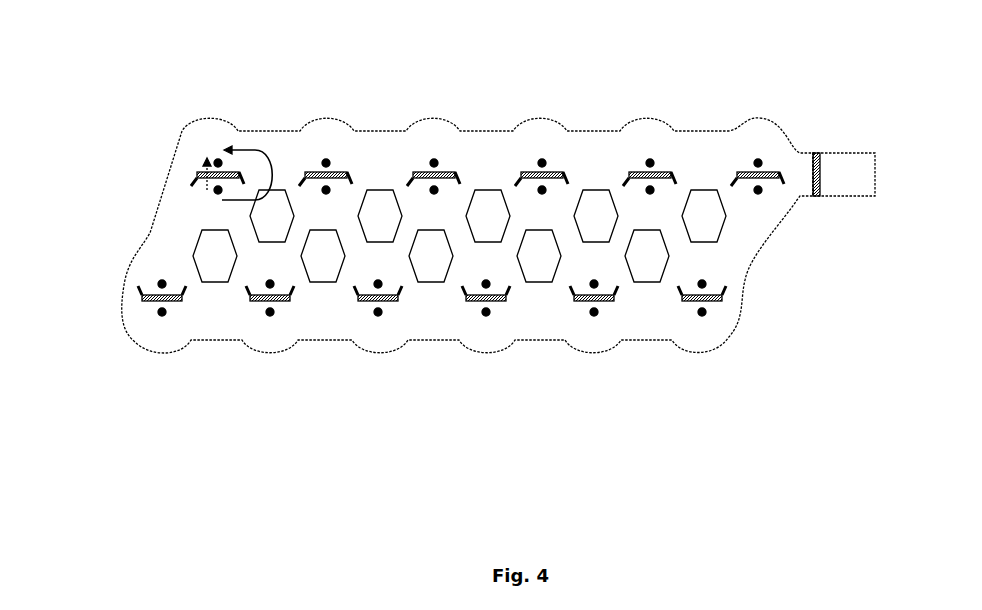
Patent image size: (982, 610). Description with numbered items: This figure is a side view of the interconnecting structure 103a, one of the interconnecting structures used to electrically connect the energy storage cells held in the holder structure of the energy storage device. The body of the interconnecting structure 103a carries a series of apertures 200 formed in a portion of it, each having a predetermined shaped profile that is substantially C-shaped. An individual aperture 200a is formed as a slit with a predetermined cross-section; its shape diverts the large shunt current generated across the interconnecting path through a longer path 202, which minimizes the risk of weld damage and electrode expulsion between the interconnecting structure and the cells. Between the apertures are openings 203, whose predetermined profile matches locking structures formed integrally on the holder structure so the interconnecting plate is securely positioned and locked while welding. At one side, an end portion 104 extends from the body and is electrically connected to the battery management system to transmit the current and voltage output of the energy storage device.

The interconnecting structure 103a is at (114, 50).
The end portion 104 is at (831, 166).
The apertures 200 is at (410, 173).
The aperture 200a is at (643, 171).
The longer path 202 is at (249, 147).
The openings 203 is at (495, 188).